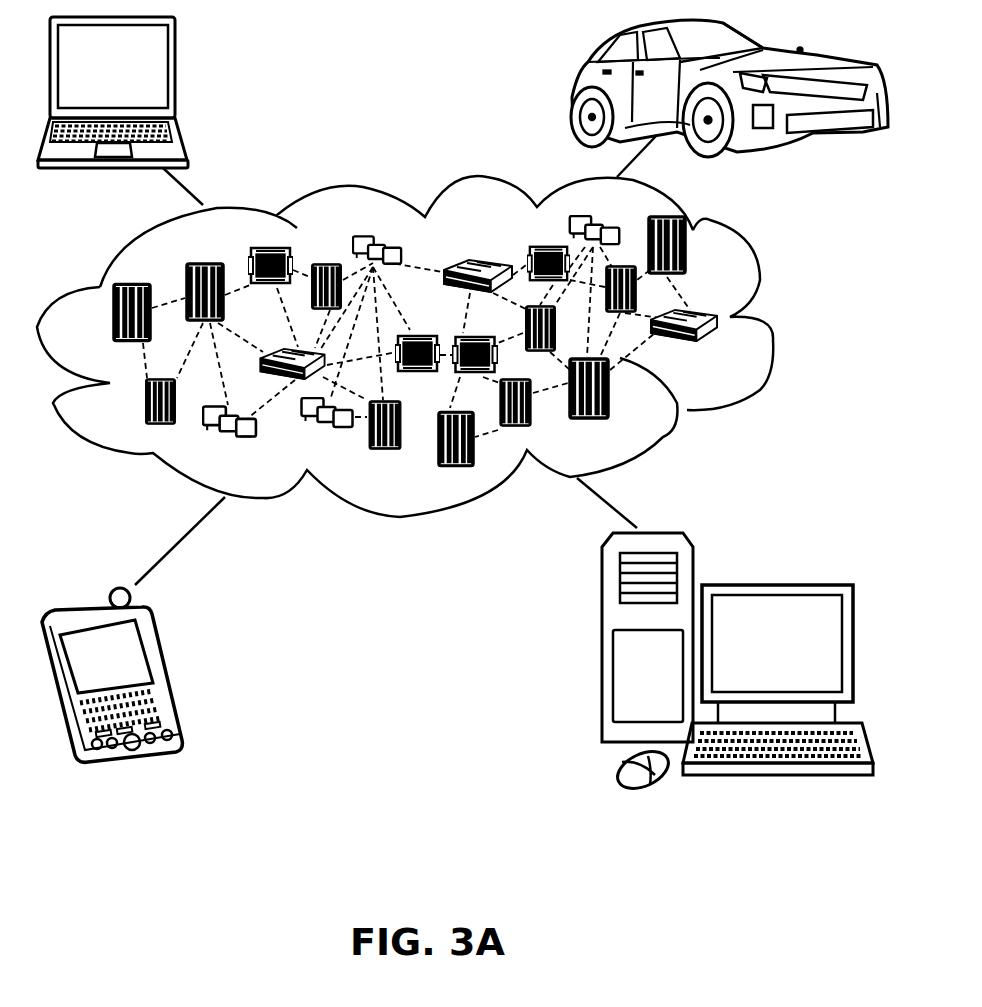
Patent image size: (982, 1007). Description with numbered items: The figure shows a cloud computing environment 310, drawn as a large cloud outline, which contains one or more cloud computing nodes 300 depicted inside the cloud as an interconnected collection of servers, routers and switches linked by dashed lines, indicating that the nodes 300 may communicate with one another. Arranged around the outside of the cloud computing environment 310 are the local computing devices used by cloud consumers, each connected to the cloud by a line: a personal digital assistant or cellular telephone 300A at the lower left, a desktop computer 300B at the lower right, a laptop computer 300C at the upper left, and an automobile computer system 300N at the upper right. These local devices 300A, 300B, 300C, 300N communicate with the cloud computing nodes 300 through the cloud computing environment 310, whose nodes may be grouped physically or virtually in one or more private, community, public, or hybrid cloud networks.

The cloud computing nodes 300 is at (469, 341).
The cloud computing environment 310 is at (777, 327).
The personal digital assistant (PDA) or cellular telephone 300A is at (167, 667).
The desktop computer 300B is at (773, 585).
The laptop computer 300C is at (175, 72).
The automobile computer system 300N is at (573, 88).